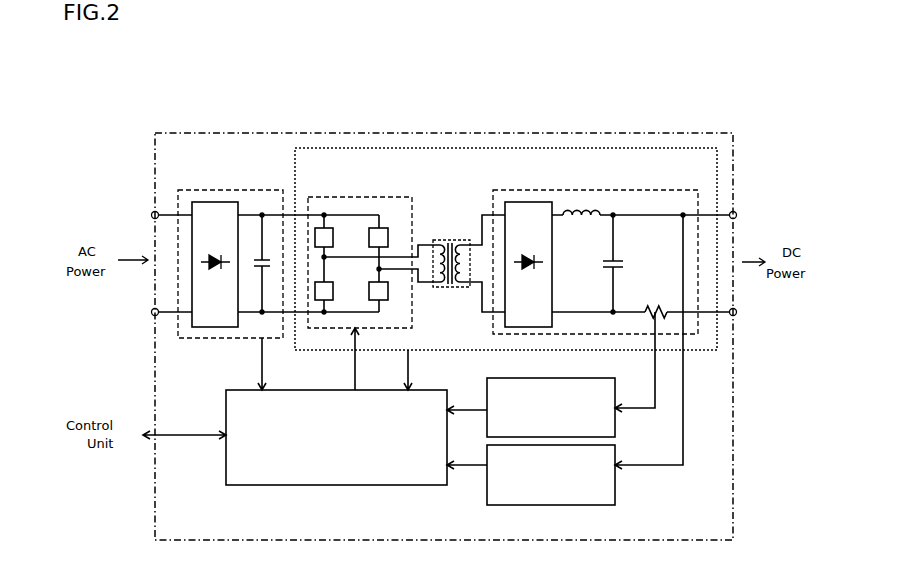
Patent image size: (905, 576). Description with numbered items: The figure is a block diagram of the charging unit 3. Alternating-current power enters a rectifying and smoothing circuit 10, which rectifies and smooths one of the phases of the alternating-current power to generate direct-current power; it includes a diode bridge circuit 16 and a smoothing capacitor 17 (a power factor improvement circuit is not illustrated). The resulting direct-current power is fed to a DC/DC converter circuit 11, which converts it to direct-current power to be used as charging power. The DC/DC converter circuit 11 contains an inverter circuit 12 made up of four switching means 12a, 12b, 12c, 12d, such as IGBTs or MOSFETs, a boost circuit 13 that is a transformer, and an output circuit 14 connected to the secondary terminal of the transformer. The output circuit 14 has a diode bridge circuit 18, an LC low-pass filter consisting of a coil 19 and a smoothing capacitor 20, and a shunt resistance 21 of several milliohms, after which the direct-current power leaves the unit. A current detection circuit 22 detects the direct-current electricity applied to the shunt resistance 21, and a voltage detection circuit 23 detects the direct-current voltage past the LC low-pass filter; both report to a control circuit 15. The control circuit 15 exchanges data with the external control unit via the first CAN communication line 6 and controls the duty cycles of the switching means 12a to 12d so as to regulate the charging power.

The charging unit 3 is at (165, 110).
The first CAN communication line 6 is at (172, 440).
The rectifying and smoothing circuit 10 is at (253, 190).
The DC/DC converter circuit 11 is at (575, 147).
The inverter circuit 12 is at (370, 242).
The switching means 12a is at (334, 242).
The switching means 12b is at (334, 292).
The switching means 12c is at (389, 237).
The switching means 12d is at (388, 296).
The boost circuit 13 is at (462, 240).
The output circuit 14 is at (673, 190).
The control circuit 15 is at (375, 486).
The diode bridge circuit 16 is at (218, 201).
The smoothing capacitor 17 is at (266, 259).
The diode bridge circuit 18 is at (527, 201).
The coil 19 is at (570, 219).
The smoothing capacitor 20 is at (616, 259).
The shunt resistance 21 is at (652, 305).
The current detection circuit 22 is at (515, 378).
The voltage detection circuit 23 is at (510, 506).